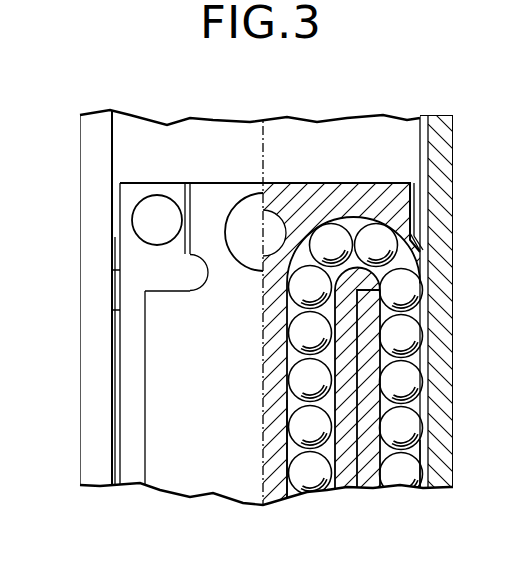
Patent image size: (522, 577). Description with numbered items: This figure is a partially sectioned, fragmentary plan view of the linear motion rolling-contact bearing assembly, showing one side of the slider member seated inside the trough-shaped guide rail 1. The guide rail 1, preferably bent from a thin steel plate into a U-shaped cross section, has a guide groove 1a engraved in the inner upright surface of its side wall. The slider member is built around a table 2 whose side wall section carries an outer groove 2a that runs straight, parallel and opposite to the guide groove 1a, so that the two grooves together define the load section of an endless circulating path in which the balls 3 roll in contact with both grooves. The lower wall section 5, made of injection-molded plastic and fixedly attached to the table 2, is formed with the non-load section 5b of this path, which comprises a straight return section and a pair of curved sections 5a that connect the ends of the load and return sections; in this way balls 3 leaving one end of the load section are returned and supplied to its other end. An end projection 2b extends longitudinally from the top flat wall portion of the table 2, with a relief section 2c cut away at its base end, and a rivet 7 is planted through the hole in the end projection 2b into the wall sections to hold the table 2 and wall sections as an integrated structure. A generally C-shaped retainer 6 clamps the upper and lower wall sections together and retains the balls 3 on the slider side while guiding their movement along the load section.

The guide rail 1 is at (449, 150).
The guide groove 1a is at (427, 493).
The table 2 is at (192, 480).
The groove 2a is at (373, 488).
The end projection 2b is at (213, 198).
The relief section 2c is at (187, 210).
The balls 3 is at (317, 480).
The lower wall section 5 is at (308, 190).
The curved section 5a is at (360, 207).
The non-load section 5b is at (282, 490).
The retainer 6 is at (130, 264).
The rivet 7 is at (253, 207).